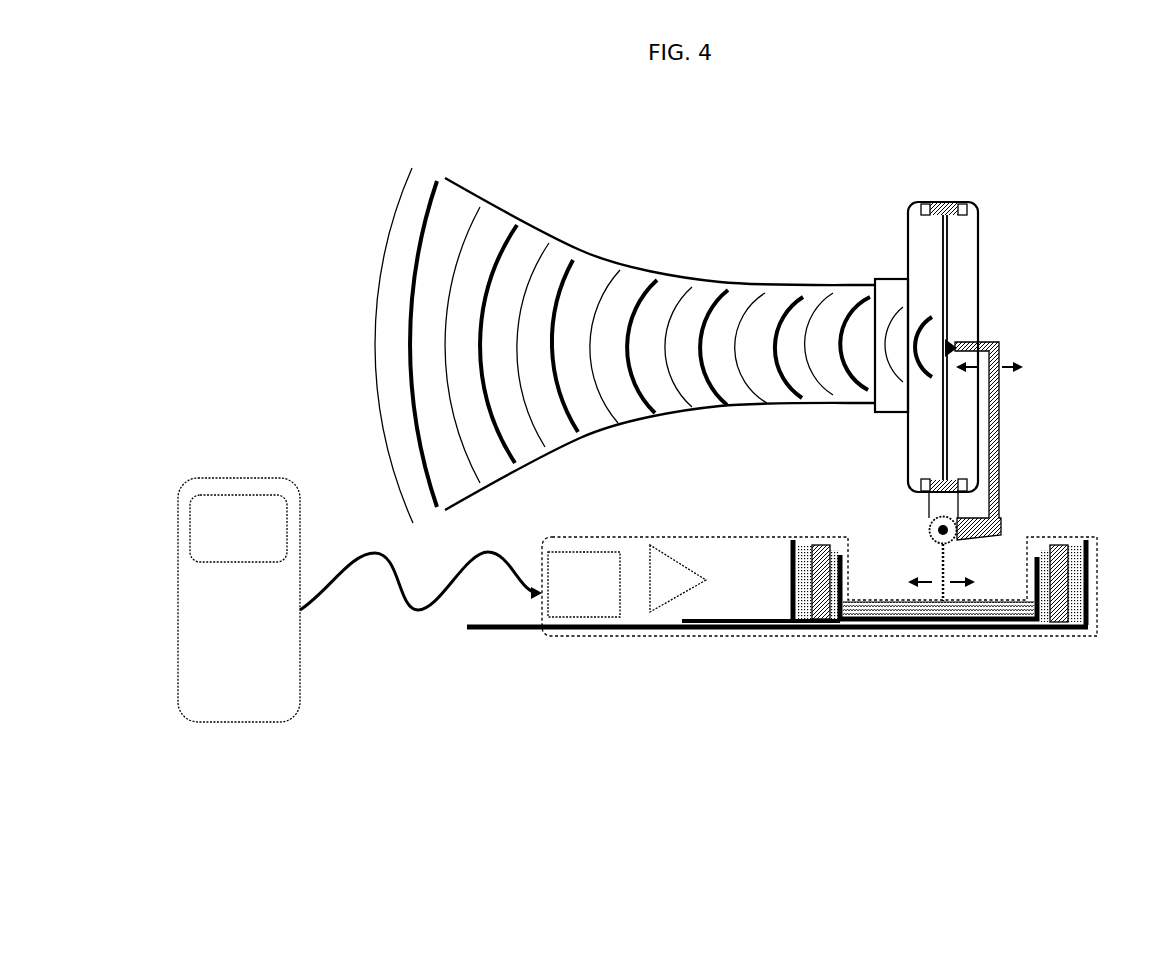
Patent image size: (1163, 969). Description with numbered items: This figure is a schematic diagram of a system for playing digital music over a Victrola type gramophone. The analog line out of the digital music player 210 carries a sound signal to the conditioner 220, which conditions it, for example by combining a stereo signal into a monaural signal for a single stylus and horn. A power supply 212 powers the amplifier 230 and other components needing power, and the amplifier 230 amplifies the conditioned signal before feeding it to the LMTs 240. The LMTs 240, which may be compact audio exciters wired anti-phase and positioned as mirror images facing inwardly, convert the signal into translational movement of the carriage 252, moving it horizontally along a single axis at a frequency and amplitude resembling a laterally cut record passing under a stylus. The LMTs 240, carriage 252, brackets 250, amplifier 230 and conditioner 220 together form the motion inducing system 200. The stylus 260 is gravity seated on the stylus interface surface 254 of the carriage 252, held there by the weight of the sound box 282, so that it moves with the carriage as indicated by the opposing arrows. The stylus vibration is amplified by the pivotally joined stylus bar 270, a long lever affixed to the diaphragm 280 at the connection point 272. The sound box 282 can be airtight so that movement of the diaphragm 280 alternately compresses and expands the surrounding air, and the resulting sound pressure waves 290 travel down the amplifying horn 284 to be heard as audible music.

The motion inducing system 200 is at (521, 771).
The digital music player 210 is at (360, 600).
The power supply 212 is at (572, 645).
The conditioner 220 is at (584, 584).
The amplifier 230 is at (665, 570).
The LMT 240 is at (817, 607).
The brackets 250 is at (790, 560).
The carriage 252 is at (947, 621).
The stylus interface surface 254 is at (987, 602).
The stylus 260 is at (940, 572).
The stylus bar 270 is at (999, 453).
The connection point 272 is at (950, 343).
The diaphragm 280 is at (947, 280).
The sound box 282 is at (908, 258).
The amplifying horn 284 is at (693, 280).
The sound pressure waves 290 is at (613, 272).